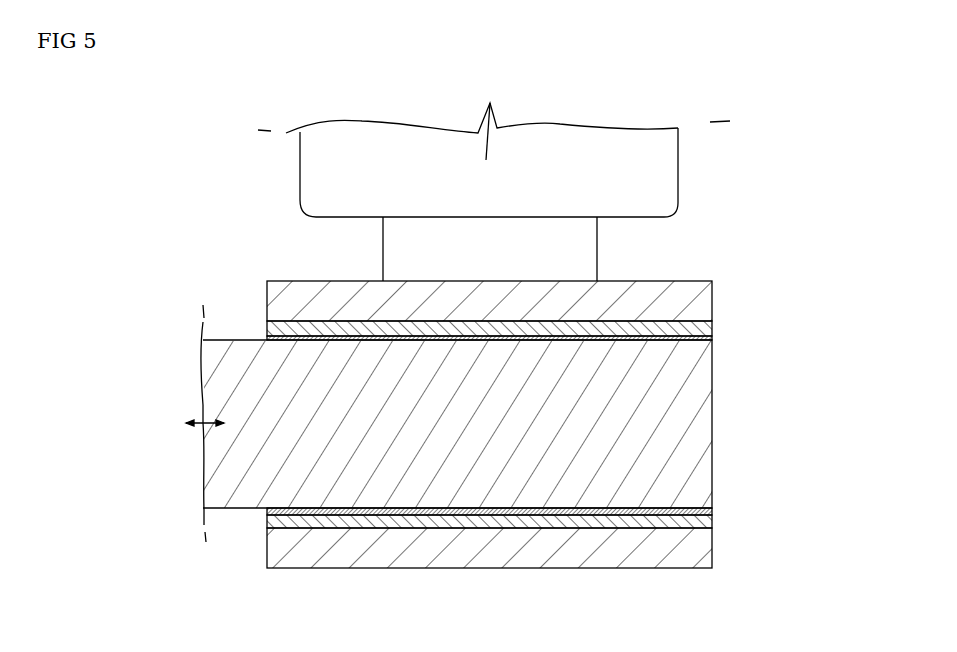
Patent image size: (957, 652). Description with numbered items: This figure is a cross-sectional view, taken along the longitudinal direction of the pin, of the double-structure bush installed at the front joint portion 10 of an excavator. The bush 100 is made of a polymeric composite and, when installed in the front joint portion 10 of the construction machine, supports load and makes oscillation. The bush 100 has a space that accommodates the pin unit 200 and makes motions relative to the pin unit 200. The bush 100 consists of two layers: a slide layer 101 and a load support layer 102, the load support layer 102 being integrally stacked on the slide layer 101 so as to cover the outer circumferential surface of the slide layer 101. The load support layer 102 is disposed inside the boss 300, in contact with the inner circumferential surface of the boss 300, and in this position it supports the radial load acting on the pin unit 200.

The joint portion 10 is at (711, 248).
The bush 100 is at (559, 346).
The slide layer 101 is at (682, 342).
The load support layer 102 is at (712, 330).
The pin unit 200 is at (685, 462).
The boss 300 is at (690, 545).